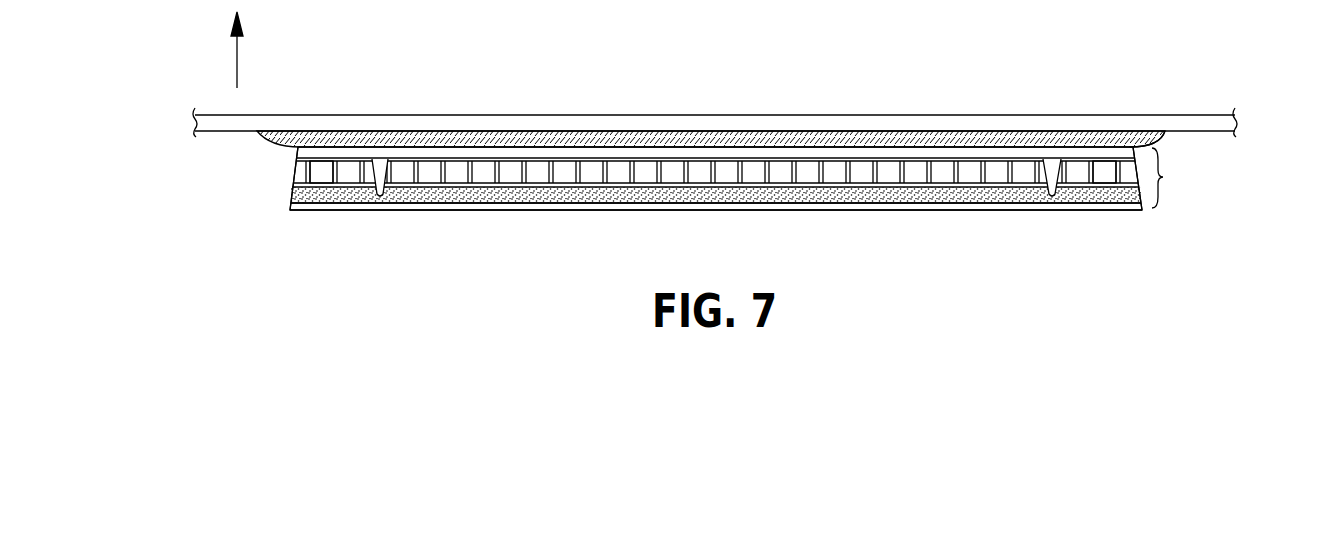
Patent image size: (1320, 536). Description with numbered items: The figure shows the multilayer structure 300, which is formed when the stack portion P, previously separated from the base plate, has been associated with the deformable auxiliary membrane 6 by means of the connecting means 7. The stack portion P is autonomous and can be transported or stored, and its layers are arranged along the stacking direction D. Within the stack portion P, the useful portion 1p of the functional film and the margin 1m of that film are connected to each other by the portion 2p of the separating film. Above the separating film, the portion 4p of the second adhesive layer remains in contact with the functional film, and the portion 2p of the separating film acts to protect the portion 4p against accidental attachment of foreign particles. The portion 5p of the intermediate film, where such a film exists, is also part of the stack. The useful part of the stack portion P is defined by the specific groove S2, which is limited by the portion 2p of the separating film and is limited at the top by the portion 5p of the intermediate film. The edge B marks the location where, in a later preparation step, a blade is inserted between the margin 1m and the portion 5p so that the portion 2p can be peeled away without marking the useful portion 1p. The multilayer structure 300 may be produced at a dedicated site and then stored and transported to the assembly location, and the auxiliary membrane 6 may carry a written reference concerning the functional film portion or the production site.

The multilayer structure 300 is at (1016, 71).
The deformable auxiliary membrane 6 is at (1112, 128).
The connecting means 7 is at (1169, 139).
The stack portion P is at (736, 178).
The edge B is at (278, 222).
The stacking direction D is at (248, 50).
The groove S2 is at (375, 162).
The margin 1m is at (327, 172).
The useful portion of functional film 1p is at (697, 172).
The portion of separating film 2p is at (890, 207).
The portion of second adhesive layer 4p is at (817, 195).
The portion of intermediate film 5p is at (563, 152).